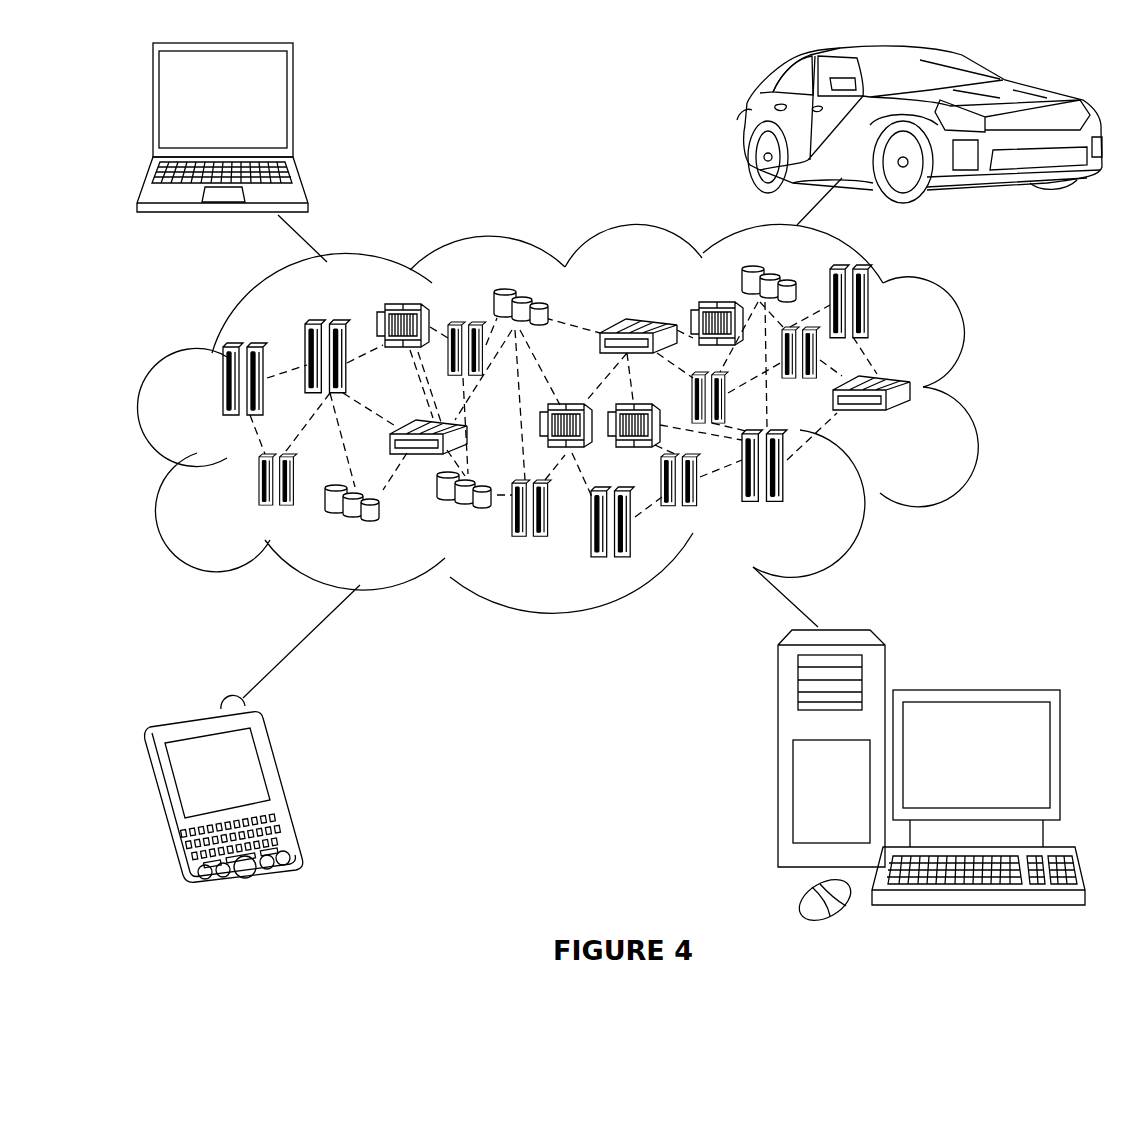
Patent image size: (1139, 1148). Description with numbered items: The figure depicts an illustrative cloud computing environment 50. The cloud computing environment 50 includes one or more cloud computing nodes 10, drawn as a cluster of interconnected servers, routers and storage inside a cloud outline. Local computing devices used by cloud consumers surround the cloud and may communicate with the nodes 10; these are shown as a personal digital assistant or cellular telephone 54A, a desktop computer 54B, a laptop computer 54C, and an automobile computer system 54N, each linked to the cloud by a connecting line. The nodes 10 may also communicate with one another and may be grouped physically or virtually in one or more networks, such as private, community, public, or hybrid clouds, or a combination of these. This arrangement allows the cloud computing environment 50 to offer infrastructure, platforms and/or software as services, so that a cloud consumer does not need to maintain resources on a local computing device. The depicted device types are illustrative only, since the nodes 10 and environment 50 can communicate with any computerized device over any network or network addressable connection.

The cloud computing node 10 is at (913, 419).
The cloud computing environment 50 is at (588, 418).
The personal digital assistant (PDA) or cellular telephone 54A is at (285, 787).
The desktop computer 54B is at (972, 688).
The laptop computer 54C is at (293, 108).
The automobile computer system 54N is at (749, 124).